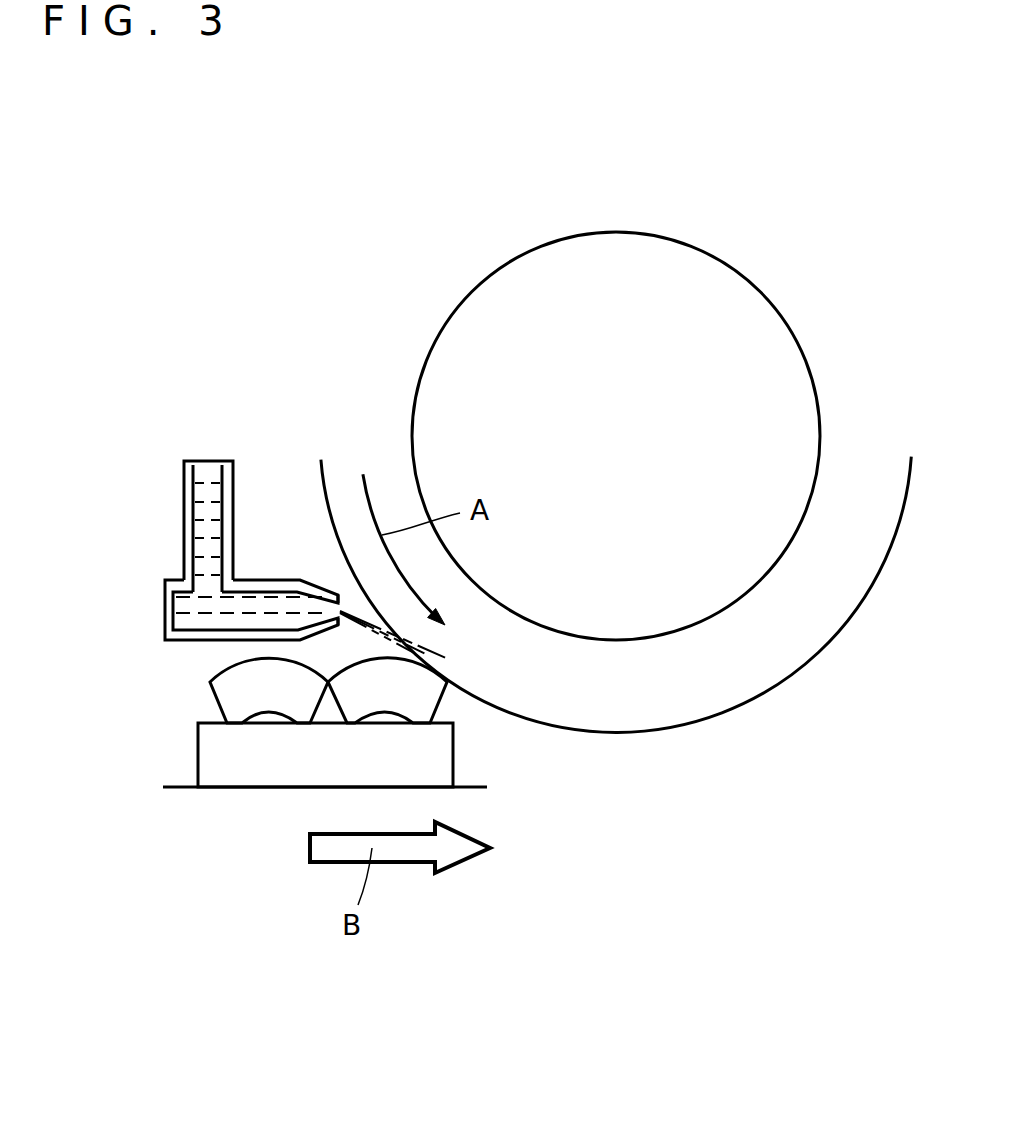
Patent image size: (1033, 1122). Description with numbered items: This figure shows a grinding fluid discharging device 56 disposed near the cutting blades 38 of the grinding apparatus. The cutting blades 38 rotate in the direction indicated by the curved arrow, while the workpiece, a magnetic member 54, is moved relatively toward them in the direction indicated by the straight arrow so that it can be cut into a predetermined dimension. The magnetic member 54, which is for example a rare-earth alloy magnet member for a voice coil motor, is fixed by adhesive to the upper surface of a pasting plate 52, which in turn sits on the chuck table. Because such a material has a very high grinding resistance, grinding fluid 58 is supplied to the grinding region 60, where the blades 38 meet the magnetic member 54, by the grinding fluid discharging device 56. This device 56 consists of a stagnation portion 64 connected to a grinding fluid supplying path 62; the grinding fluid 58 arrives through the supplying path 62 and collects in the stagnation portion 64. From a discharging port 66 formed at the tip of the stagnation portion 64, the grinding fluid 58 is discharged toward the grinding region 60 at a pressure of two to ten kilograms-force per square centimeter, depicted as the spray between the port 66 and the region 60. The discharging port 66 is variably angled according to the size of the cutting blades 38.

The cutting blade 38 is at (718, 688).
The pasting plate 52 is at (212, 758).
The magnetic member 54 is at (355, 695).
The grinding fluid discharging device 56 is at (210, 579).
The grinding fluid 58 is at (197, 622).
The grinding region 60 is at (460, 694).
The grinding fluid supplying path 62 is at (188, 537).
The stagnation portion 64 is at (172, 608).
The discharging port 66 is at (340, 606).